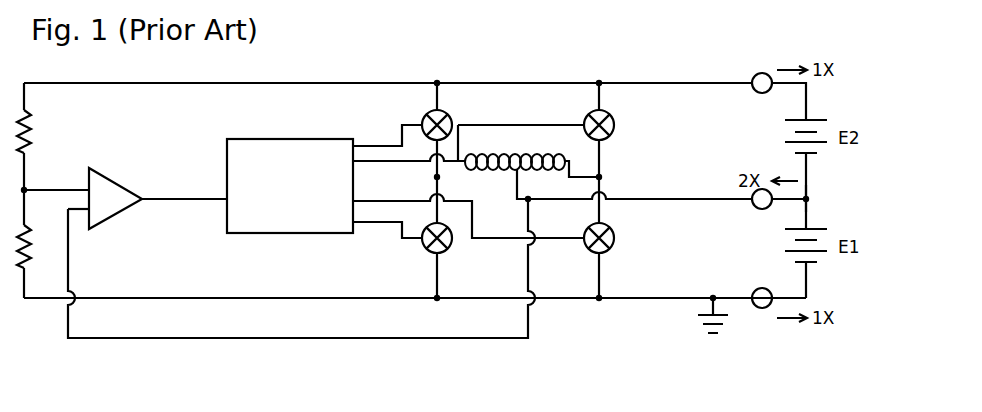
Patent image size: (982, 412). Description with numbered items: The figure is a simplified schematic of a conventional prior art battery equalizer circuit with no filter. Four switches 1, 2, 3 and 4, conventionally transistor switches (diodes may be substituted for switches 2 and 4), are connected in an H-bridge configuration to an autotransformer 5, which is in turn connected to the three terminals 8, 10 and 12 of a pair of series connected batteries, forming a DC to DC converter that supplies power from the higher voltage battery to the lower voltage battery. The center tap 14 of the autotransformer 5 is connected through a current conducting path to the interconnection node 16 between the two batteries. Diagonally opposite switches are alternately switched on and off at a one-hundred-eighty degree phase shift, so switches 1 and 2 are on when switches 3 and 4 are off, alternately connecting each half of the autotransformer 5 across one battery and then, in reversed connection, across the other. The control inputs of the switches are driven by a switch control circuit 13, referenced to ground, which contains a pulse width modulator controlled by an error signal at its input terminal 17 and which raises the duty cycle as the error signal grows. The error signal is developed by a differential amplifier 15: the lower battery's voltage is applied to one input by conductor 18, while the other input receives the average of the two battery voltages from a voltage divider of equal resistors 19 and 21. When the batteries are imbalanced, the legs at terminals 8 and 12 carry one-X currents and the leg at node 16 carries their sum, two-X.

The switch 1 is at (613, 122).
The switch 2 is at (447, 250).
The switch 3 is at (448, 114).
The switch 4 is at (610, 249).
The autotransformer 5 is at (511, 157).
The terminal 8 is at (755, 93).
The terminal 10 is at (757, 209).
The terminal 12 is at (759, 309).
The switch control circuit 13 is at (292, 233).
The center tap 14 is at (517, 183).
The differential amplifier 15 is at (114, 182).
The interconnection node 16 is at (808, 198).
The input terminal 17 is at (172, 200).
The conductor 18 is at (243, 338).
The resistor 19 is at (33, 136).
The resistor 21 is at (29, 232).